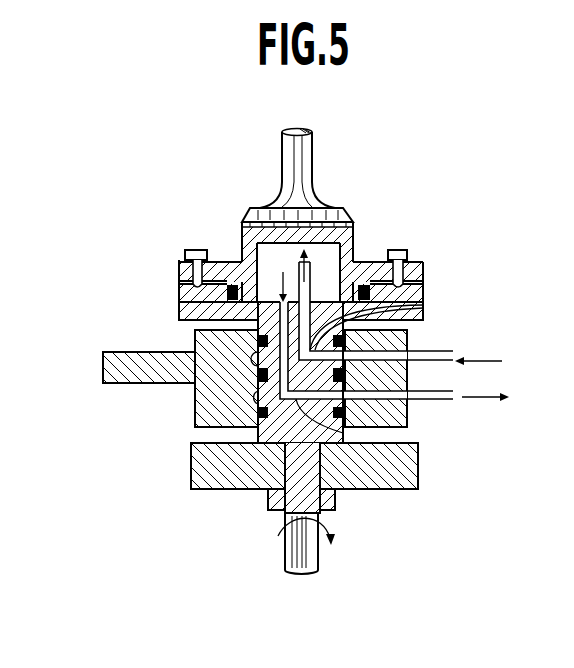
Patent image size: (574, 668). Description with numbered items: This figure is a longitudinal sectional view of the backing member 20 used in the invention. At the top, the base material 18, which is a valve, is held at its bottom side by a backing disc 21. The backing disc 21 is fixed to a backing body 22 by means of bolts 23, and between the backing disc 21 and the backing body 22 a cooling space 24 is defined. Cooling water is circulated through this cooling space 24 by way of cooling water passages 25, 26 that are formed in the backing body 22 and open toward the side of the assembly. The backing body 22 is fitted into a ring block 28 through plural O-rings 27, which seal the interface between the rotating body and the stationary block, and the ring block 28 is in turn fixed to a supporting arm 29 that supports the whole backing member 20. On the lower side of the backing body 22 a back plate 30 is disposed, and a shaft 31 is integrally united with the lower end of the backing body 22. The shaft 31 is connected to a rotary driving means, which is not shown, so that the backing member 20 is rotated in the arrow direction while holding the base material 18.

The base material 18 is at (303, 168).
The backing member 20 is at (430, 258).
The backing disc 21 is at (343, 237).
The backing body 22 is at (422, 287).
The bolts 23 is at (195, 250).
The cooling space 24 is at (252, 213).
The cooling water passage 25 is at (423, 312).
The cooling water passage 26 is at (345, 433).
The O-rings 27 is at (265, 411).
The ring block 28 is at (196, 406).
The supporting arm 29 is at (108, 363).
The back plate 30 is at (410, 488).
The shaft 31 is at (320, 560).